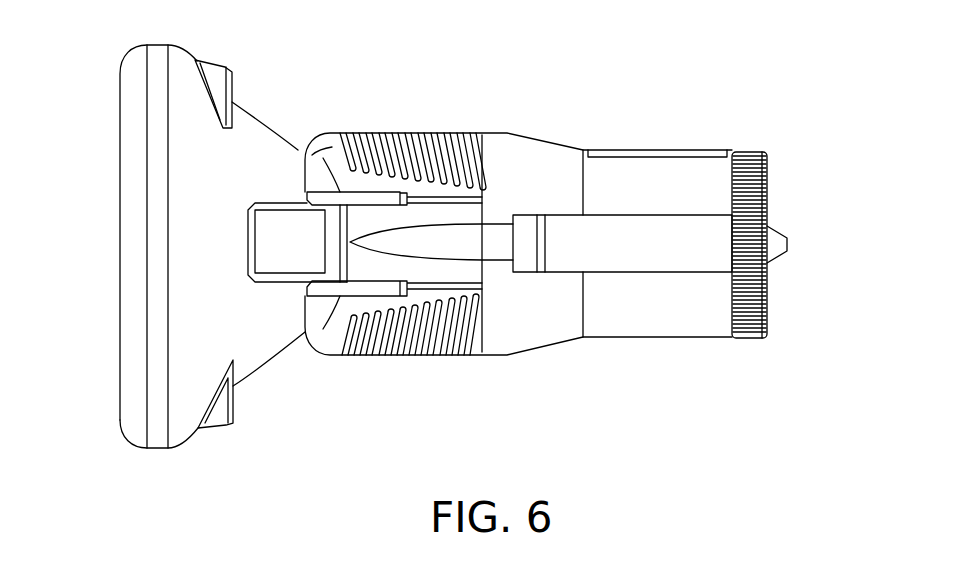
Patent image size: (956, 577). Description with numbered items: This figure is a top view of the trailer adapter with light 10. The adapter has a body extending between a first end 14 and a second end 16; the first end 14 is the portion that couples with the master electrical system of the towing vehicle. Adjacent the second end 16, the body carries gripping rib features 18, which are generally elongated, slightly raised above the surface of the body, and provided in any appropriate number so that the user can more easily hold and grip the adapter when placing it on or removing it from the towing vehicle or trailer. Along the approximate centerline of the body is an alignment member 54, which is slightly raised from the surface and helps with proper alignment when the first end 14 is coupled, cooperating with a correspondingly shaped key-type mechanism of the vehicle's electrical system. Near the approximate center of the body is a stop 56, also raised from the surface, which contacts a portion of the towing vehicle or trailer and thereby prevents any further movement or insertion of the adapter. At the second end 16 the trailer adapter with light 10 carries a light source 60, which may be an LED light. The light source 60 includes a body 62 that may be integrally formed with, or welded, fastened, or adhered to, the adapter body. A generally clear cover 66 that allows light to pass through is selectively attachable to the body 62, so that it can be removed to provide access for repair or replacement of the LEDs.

The trailer adapter with light 10 is at (552, 88).
The first end 14 is at (786, 176).
The second end 16 is at (284, 98).
The rib features 18 is at (401, 137).
The alignment member 54 is at (645, 235).
The stop 56 is at (528, 252).
The light source 60 is at (139, 431).
The body 62 is at (293, 150).
The cover 66 is at (129, 102).